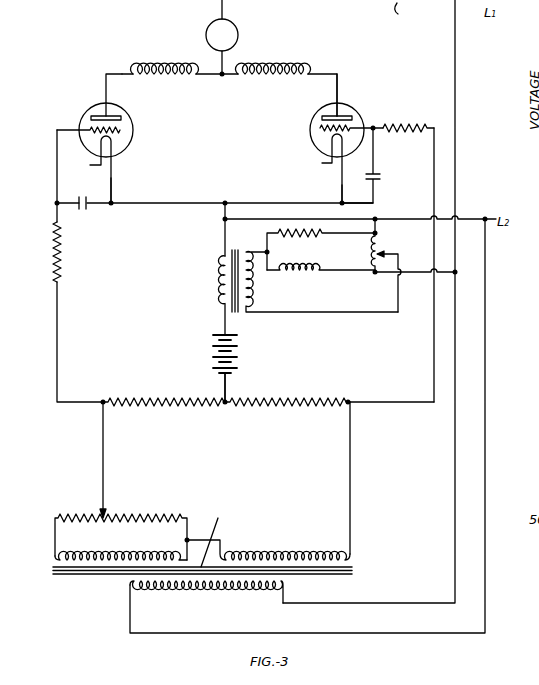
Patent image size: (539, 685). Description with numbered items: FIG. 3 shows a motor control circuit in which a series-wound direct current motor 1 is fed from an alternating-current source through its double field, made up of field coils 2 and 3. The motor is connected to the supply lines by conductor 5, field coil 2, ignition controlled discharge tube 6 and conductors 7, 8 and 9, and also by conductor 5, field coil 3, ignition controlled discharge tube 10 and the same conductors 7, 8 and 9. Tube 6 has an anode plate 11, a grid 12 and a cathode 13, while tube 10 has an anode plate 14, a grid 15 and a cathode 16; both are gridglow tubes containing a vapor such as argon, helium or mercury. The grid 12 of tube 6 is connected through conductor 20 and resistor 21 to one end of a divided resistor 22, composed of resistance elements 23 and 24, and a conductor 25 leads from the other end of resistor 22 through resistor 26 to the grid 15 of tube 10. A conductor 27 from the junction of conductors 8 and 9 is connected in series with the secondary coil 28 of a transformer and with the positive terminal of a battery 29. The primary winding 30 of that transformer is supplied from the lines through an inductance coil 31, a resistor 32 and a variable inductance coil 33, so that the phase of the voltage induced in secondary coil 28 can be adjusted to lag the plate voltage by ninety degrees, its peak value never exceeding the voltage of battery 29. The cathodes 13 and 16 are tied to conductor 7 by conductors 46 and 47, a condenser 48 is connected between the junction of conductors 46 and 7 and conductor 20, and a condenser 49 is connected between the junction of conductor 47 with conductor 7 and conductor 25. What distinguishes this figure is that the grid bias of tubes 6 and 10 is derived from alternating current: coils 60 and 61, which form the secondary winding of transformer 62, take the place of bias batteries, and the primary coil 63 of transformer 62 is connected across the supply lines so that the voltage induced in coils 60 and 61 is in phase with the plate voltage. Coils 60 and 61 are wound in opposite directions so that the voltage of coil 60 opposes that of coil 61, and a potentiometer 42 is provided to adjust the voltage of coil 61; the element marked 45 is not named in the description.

The direct current motor 1 is at (231, 31).
The field coil 2 is at (166, 68).
The field coil 3 is at (288, 66).
The conductor 5 is at (401, 15).
The ignition controlled discharge tube 6 is at (126, 112).
The conductor 7 is at (259, 202).
The conductor 8 is at (221, 222).
The conductor 9 is at (401, 218).
The ignition controlled discharge tube 10 is at (360, 111).
The anode plate 11 is at (97, 110).
The grid 12 is at (124, 130).
The cathode 13 is at (113, 142).
The anode plate 14 is at (330, 112).
The grid 15 is at (320, 128).
The cathode 16 is at (330, 144).
The conductor 20 is at (57, 170).
The resistor 21 is at (62, 270).
The divided resistor 22 is at (225, 415).
The resistance element 23 is at (158, 399).
The resistance element 24 is at (318, 399).
The conductor 25 is at (396, 400).
The resistor 26 is at (418, 124).
The conductor 27 is at (222, 245).
The secondary coil 28 is at (220, 300).
The battery 29 is at (242, 362).
The primary winding 30 is at (250, 306).
The inductance coil 31 is at (318, 272).
The resistor 32 is at (321, 236).
The variable inductance coil 33 is at (382, 244).
The potentiometer 42 is at (130, 515).
The sliding contact 45 is at (100, 449).
The conductor 46 is at (115, 187).
The conductor 47 is at (341, 188).
The condenser 48 is at (86, 211).
The condenser 49 is at (382, 178).
The coil 60 is at (279, 555).
The coil 61 is at (115, 556).
The transformer 62 is at (214, 534).
The primary coil 63 is at (188, 586).